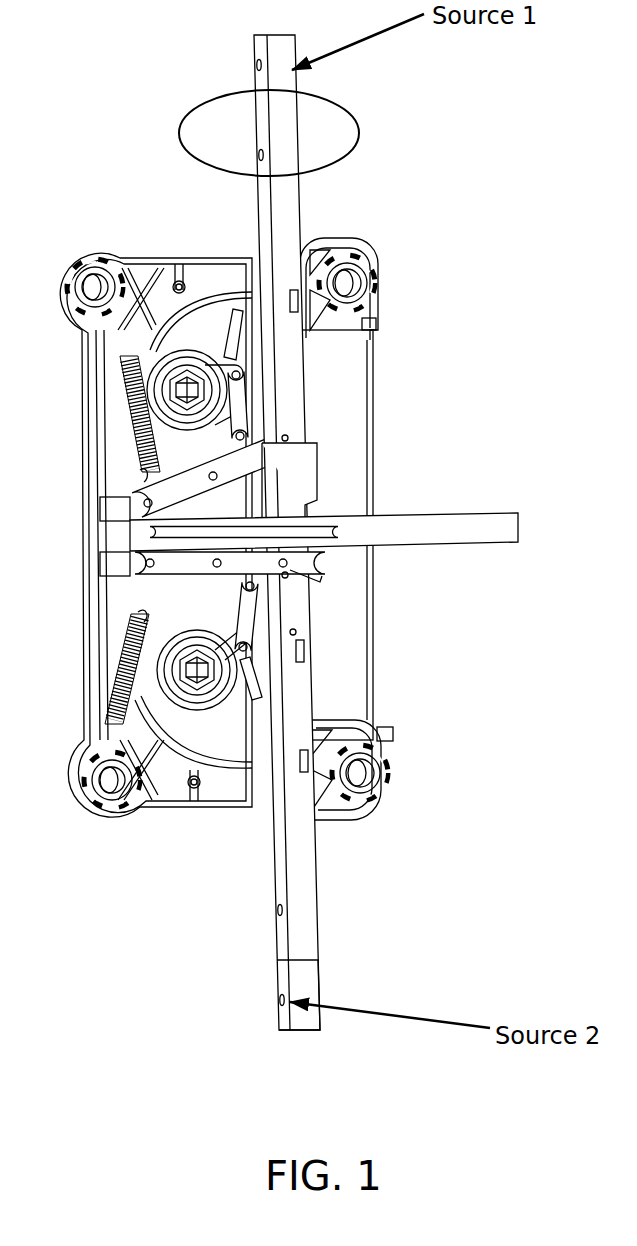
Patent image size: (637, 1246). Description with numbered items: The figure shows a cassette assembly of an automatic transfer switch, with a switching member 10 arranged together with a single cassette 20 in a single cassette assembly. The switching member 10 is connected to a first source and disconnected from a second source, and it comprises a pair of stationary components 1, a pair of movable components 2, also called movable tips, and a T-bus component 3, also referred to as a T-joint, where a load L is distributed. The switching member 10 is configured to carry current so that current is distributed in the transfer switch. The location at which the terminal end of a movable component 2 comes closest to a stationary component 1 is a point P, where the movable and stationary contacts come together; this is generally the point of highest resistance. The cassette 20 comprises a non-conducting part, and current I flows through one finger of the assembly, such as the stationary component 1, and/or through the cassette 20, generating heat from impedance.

The stationary component 1 is at (296, 192).
The movable component 2 is at (130, 576).
The T-bus component 3 is at (126, 496).
The switching member 10 is at (317, 983).
The cassette 20 is at (367, 377).
The point P is at (290, 437).
The load L is at (422, 542).
The current I is at (352, 137).